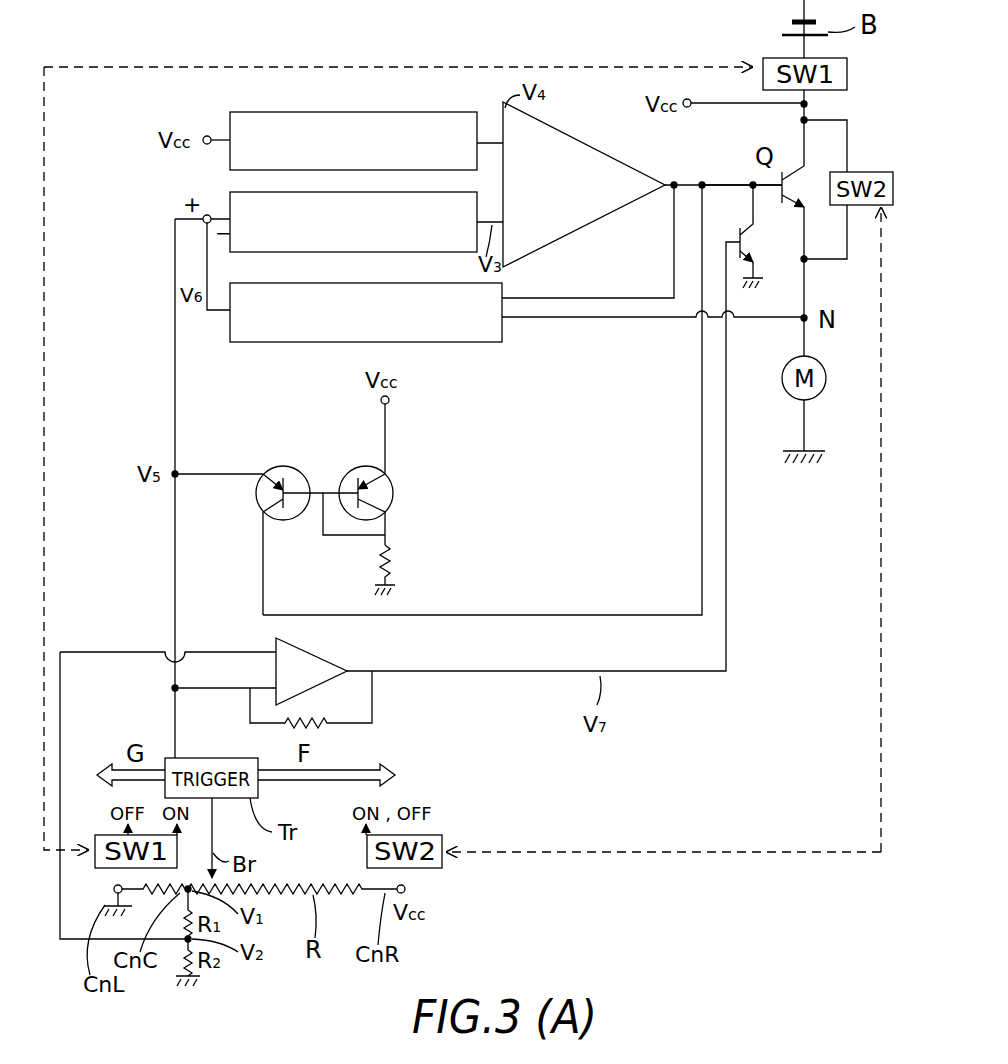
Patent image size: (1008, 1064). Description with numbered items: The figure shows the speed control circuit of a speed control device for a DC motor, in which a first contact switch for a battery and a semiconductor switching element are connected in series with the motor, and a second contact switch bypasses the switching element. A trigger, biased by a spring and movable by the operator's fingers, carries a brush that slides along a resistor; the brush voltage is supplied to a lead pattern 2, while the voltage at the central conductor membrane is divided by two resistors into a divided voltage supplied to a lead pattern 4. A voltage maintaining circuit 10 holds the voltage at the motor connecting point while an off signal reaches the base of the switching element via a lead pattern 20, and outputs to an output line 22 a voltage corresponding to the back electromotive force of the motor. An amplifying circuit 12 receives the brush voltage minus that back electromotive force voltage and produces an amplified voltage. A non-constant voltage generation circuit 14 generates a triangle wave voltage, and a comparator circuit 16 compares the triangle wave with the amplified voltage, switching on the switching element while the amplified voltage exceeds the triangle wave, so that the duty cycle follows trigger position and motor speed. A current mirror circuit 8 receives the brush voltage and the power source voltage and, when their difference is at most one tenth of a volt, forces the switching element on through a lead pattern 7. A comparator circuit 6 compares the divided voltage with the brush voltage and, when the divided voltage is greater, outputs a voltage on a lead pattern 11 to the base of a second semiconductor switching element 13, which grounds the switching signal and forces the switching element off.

The lead pattern 2 is at (175, 568).
The lead pattern 4 is at (60, 905).
The comparator circuit 6 is at (322, 652).
The lead pattern 7 is at (540, 615).
The current mirror circuit 8 is at (400, 496).
The voltage maintaining circuit 10 is at (505, 290).
The lead pattern 11 is at (728, 640).
The amplifying circuit 12 is at (455, 196).
The second semiconductor switching element 13 is at (755, 246).
The non-constant voltage generation circuit 14 is at (448, 113).
The comparator circuit 16 is at (628, 173).
The lead pattern 20 is at (727, 185).
The output line 22 is at (214, 313).